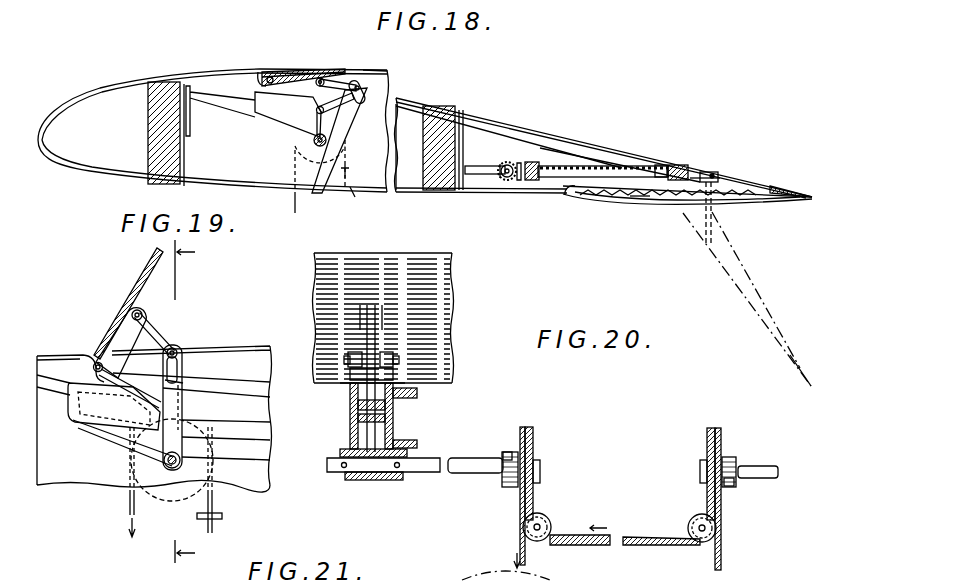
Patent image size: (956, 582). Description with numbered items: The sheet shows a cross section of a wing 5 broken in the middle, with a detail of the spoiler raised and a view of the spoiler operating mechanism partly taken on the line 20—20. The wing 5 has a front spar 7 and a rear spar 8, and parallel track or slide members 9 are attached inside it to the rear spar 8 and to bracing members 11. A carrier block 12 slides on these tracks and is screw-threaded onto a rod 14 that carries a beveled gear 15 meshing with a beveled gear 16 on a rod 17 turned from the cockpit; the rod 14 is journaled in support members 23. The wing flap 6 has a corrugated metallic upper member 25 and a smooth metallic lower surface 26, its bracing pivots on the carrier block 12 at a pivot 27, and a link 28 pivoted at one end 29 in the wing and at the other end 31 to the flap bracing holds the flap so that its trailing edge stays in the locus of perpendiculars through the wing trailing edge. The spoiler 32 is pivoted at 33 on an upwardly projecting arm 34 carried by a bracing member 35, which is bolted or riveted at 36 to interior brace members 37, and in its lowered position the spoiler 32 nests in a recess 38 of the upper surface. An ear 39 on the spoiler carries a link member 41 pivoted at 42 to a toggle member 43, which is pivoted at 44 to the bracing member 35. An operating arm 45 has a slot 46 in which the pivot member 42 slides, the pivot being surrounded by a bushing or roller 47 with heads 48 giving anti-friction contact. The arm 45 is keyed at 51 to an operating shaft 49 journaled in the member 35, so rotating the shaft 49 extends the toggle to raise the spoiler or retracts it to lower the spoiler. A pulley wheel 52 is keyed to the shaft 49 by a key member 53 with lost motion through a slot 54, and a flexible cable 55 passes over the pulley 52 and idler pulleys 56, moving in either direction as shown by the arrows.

In FIG. 18, the wing section 5 is at (217, 68).
In FIG. 18, the wing flap 6 is at (796, 200).
In FIG. 18, the front spar 7 is at (150, 88).
In FIG. 18, the rear spar 8 is at (445, 108).
In FIG. 18, the track or slide member 9 is at (485, 166).
In FIG. 18, the bracing member 11 is at (566, 152).
In FIG. 18, the carrier block 12 is at (578, 168).
In FIG. 18, the rod 14 is at (630, 167).
In FIG. 18, the beveled gear 15 is at (523, 184).
In FIG. 18, the beveled gear 16 is at (509, 181).
In FIG. 18, the rod 17 is at (503, 178).
In FIG. 19, the section line 20 is at (198, 401).
In FIG. 18, the support member 23 is at (530, 162).
In FIG. 18, the corrugated metallic member 25 is at (725, 207).
In FIG. 18, the smooth metallic surface 26 is at (652, 205).
In FIG. 18, the pivot 27 is at (565, 198).
In FIG. 18, the link 28 is at (710, 176).
In FIG. 18, the pivot 29 is at (720, 178).
In FIG. 18, the pivot 31 is at (640, 203).
In FIG. 18, the spoiler 32 is at (312, 70).
In FIG. 19, the spoiler 32 is at (150, 264).
In FIG. 18, the pivot 33 is at (279, 78).
In FIG. 18, the upwardly projecting arm 34 is at (300, 72).
In FIG. 18, the bracing member 35 is at (262, 72).
In FIG. 19, the bracing member 35 is at (103, 430).
In FIG. 20, the bracing member 35 is at (370, 482).
In FIG. 18, the bolt or rivet 36 is at (266, 118).
In FIG. 19, the bolt or rivet 36 is at (80, 423).
In FIG. 18, the interior brace member 37 is at (393, 97).
In FIG. 19, the interior brace member 37 is at (260, 447).
In FIG. 20, the interior brace member 37 is at (418, 444).
In FIG. 18, the recess 38 is at (370, 72).
In FIG. 19, the recess 38 is at (230, 347).
In FIG. 20, the recess 38 is at (383, 318).
In FIG. 18, the ear 39 is at (326, 79).
In FIG. 19, the ear 39 is at (140, 310).
In FIG. 20, the ear 39 is at (374, 305).
In FIG. 18, the link member 41 is at (345, 80).
In FIG. 19, the link member 41 is at (157, 330).
In FIG. 20, the link member 41 is at (365, 335).
In FIG. 18, the pivot member 42 is at (350, 103).
In FIG. 19, the pivot member 42 is at (177, 352).
In FIG. 20, the pivot member 42 is at (380, 372).
In FIG. 18, the toggle member 43 is at (315, 137).
In FIG. 19, the toggle member 43 is at (180, 403).
In FIG. 20, the toggle member 43 is at (386, 405).
In FIG. 18, the pivot 44 is at (316, 113).
In FIG. 20, the pivot 44 is at (386, 418).
In FIG. 18, the operating arm 45 is at (316, 194).
In FIG. 19, the operating arm 45 is at (183, 385).
In FIG. 20, the operating arm 45 is at (394, 430).
In FIG. 18, the slot 46 is at (362, 86).
In FIG. 19, the slot 46 is at (173, 368).
In FIG. 20, the slot 46 is at (402, 386).
In FIG. 19, the bushing or roller 47 is at (163, 358).
In FIG. 20, the bushing or roller 47 is at (386, 362).
In FIG. 20, the head 48 is at (392, 356).
In FIG. 18, the operating shaft 49 is at (316, 146).
In FIG. 19, the operating shaft 49 is at (183, 460).
In FIG. 20, the operating shaft 49 is at (432, 472).
In FIG. 20, the key point 51 is at (344, 471).
In FIG. 18, the pulley wheel 52 is at (348, 146).
In FIG. 19, the pulley wheel 52 is at (170, 498).
In FIG. 20, the pulley wheel 52 is at (534, 441).
In FIG. 20, the key member 53 is at (506, 482).
In FIG. 20, the slot 54 is at (507, 452).
In FIG. 18, the flexible cable 55 is at (292, 205).
In FIG. 19, the flexible cable 55 is at (128, 507).
In FIG. 20, the flexible cable 55 is at (530, 556).
In FIG. 18, the idler pulley 56 is at (358, 198).
In FIG. 19, the idler pulley 56 is at (222, 520).
In FIG. 20, the idler pulley 56 is at (550, 516).